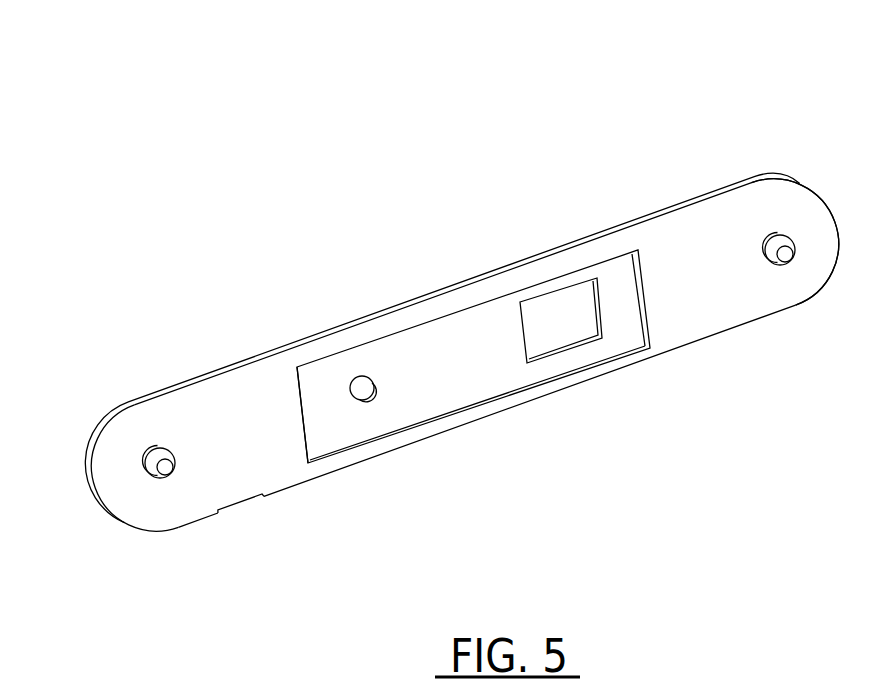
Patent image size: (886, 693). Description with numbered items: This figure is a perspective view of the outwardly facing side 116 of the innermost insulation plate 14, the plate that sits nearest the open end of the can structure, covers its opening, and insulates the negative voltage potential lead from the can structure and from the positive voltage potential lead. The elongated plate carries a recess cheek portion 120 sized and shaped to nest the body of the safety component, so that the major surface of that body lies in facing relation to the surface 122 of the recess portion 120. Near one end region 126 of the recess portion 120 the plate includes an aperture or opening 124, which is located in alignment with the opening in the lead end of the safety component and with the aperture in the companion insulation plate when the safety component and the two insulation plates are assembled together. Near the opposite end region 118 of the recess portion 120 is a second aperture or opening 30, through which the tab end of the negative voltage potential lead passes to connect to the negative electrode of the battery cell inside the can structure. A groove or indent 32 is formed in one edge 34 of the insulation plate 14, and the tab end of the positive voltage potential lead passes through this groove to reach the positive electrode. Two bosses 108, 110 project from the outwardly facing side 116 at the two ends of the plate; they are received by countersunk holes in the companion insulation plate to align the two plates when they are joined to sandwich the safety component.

The insulation plate 14 is at (743, 176).
The aperture or opening 30 is at (575, 303).
The groove or indent 32 is at (240, 500).
The edge 34 is at (442, 435).
The boss 108 is at (160, 472).
The boss 110 is at (782, 258).
The outwardly facing side 116 is at (725, 290).
The end region 118 is at (625, 333).
The recess cheek portion 120 is at (497, 375).
The surface 122 is at (450, 379).
The aperture or opening 124 is at (355, 381).
The end region 126 is at (324, 432).